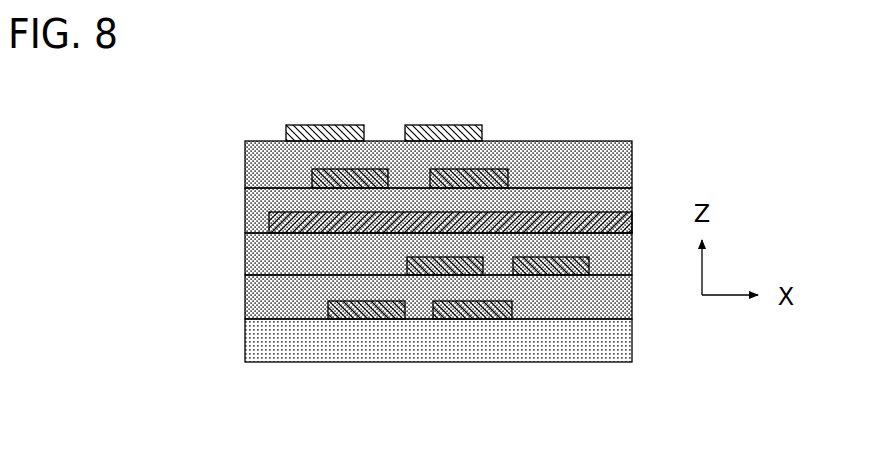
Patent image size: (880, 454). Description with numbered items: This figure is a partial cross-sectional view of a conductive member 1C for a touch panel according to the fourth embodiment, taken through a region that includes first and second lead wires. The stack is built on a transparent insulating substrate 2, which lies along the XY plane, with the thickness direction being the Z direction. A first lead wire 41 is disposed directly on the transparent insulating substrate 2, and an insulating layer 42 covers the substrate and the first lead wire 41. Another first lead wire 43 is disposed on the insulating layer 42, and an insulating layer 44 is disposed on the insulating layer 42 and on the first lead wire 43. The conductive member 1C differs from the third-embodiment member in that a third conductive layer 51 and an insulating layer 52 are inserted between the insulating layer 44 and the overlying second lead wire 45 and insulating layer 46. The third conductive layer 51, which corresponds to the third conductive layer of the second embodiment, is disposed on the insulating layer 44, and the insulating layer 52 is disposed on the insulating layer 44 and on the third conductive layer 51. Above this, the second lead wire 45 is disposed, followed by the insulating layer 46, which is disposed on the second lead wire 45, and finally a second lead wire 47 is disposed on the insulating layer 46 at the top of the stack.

The conductive member for a touch panel 1C is at (659, 104).
The transparent insulating substrate 2 is at (262, 338).
The first lead wire 41 is at (475, 320).
The insulating layer 42 is at (305, 300).
The first lead wire 43 is at (427, 262).
The insulating layer 44 is at (617, 260).
The second lead wire 45 is at (488, 178).
The insulating layer 46 is at (602, 163).
The second lead wire 47 is at (425, 125).
The third conductive layer 51 is at (290, 218).
The insulating layer 52 is at (253, 217).